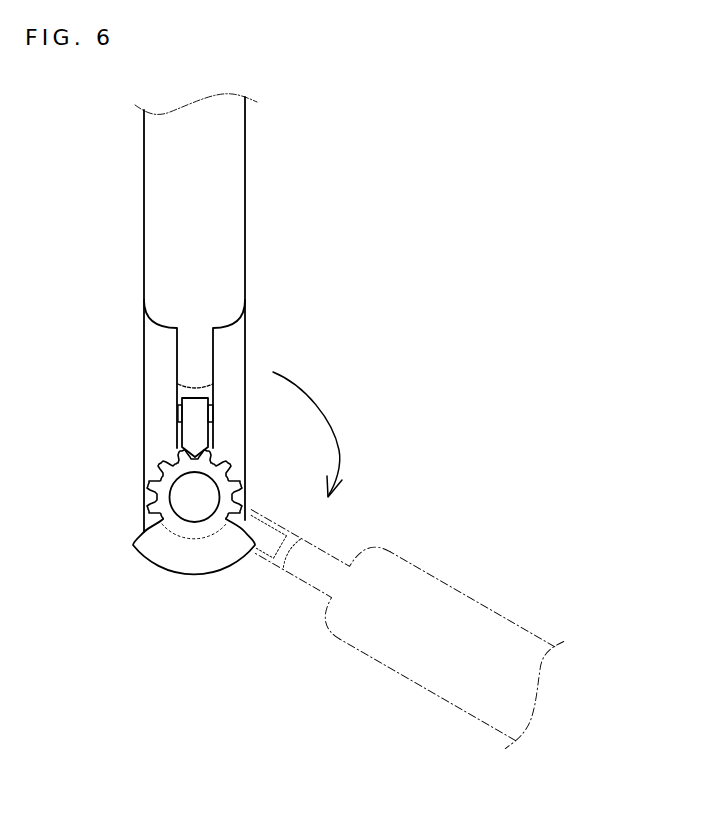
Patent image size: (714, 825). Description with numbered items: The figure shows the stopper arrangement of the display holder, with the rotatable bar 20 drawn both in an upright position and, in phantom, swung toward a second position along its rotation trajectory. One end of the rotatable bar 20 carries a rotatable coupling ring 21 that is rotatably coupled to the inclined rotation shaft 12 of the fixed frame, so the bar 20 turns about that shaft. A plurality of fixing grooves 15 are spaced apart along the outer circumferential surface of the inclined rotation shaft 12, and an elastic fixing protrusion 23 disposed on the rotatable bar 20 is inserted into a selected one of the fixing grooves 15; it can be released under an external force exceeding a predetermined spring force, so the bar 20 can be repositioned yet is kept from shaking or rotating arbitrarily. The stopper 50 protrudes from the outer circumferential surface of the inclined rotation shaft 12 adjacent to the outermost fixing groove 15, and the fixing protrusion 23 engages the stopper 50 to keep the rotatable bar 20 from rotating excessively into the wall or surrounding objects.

The rotatable bar 20 is at (163, 232).
The rotatable coupling ring 21 is at (156, 358).
The elastic fixing protrusion 23 is at (186, 432).
The fixing grooves 15 is at (173, 456).
The inclined rotation shaft 12 is at (190, 501).
The stopper 50 is at (143, 534).